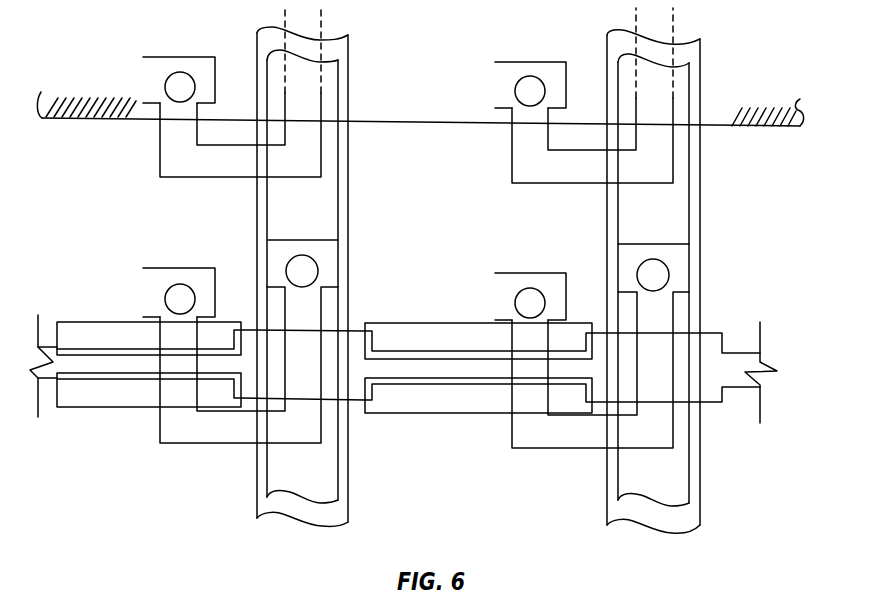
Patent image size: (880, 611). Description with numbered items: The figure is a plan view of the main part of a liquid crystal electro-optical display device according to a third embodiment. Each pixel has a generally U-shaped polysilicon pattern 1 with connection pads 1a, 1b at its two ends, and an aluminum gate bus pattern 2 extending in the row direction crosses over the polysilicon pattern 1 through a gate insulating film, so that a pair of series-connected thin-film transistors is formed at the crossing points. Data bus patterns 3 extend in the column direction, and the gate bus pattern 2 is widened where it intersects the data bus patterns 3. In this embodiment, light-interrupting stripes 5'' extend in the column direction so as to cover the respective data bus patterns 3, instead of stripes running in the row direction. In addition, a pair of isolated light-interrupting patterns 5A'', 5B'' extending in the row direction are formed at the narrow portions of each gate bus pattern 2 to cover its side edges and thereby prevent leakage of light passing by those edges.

The polysilicon pattern 1 is at (197, 180).
The connection pad 1a is at (161, 56).
The connection pad 1b is at (330, 262).
The gate bus pattern 2 is at (100, 118).
The data bus pattern 3 is at (339, 202).
The light-interrupting stripe 5'' is at (512, 280).
The isolated light-interrupting pattern 5A'' is at (317, 413).
The isolated light-interrupting pattern 5B'' is at (317, 318).